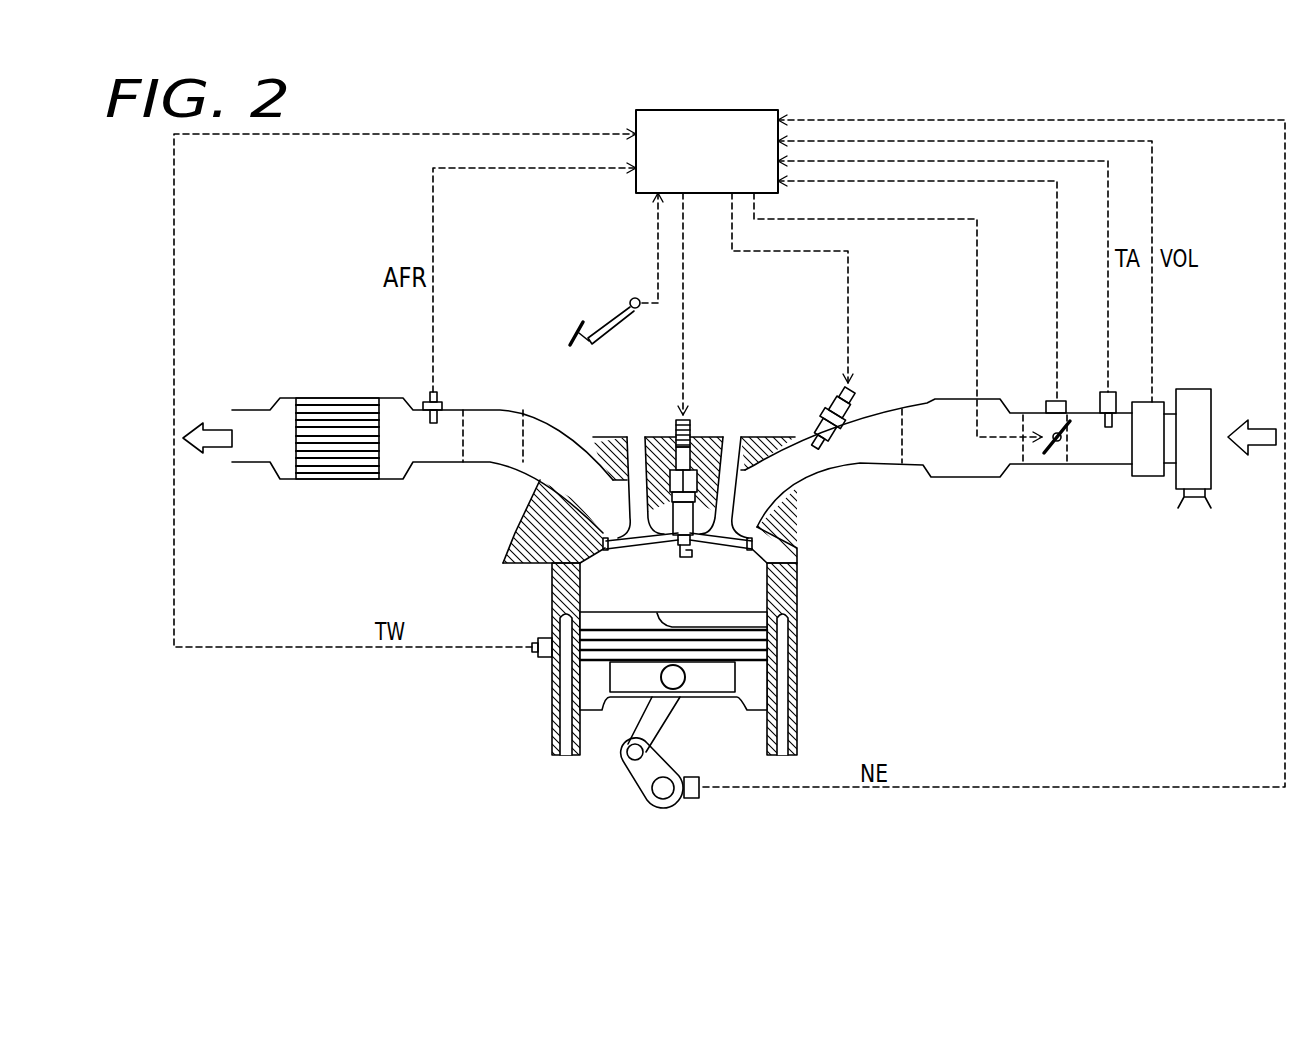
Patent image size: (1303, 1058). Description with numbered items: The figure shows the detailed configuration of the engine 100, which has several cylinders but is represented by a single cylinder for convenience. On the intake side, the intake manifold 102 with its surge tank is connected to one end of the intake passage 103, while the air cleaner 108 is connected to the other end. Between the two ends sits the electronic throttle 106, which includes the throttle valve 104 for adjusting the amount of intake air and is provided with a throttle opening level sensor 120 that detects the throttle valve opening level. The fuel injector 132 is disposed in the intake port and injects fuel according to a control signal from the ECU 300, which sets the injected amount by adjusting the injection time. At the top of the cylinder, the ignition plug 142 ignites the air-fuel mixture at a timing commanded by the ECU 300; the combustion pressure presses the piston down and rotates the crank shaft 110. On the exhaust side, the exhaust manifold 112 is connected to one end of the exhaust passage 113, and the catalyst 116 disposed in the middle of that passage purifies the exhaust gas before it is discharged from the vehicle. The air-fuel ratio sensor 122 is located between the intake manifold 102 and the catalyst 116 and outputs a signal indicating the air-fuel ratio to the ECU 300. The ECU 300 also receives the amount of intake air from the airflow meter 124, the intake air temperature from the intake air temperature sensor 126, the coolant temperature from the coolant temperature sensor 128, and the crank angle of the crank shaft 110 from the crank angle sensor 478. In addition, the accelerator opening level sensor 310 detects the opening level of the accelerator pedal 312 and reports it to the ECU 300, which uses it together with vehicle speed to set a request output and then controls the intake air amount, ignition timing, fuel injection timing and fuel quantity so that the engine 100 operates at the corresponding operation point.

The ECU 300 is at (748, 110).
The accelerator opening level sensor 310 is at (631, 298).
The accelerator pedal 312 is at (580, 323).
The engine 100 is at (591, 808).
The intake manifold 102 is at (955, 482).
The intake passage 103 is at (1100, 466).
The throttle valve 104 is at (1082, 418).
The electronic throttle 106 is at (1057, 448).
The air cleaner 108 is at (1192, 389).
The crank shaft 110 is at (650, 793).
The exhaust manifold 112 is at (485, 409).
The exhaust passage 113 is at (428, 463).
The catalyst 116 is at (340, 397).
The throttle opening level sensor 120 is at (1052, 400).
The air-fuel ratio sensor 122 is at (423, 401).
The airflow meter 124 is at (1117, 396).
The intake air temperature sensor 126 is at (1147, 476).
The coolant temperature sensor 128 is at (540, 638).
The fuel injector 132 is at (856, 394).
The ignition plug 142 is at (690, 420).
The crank angle sensor 478 is at (692, 798).